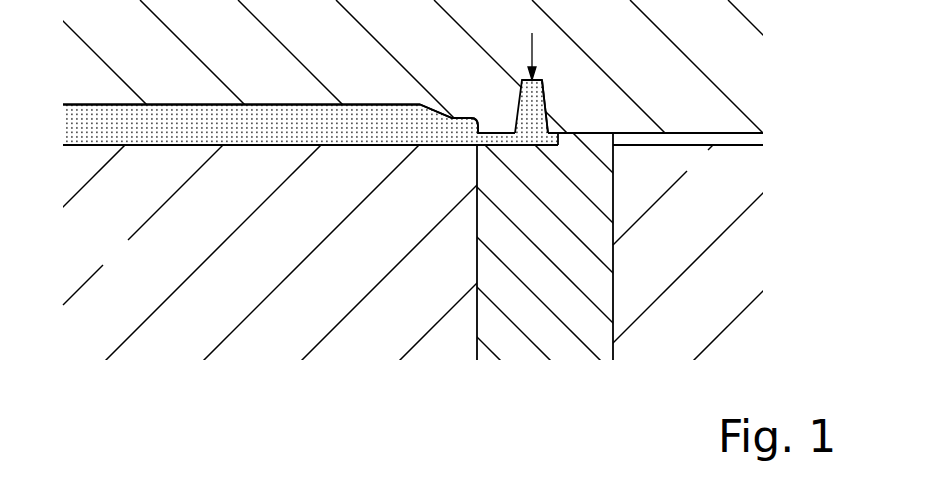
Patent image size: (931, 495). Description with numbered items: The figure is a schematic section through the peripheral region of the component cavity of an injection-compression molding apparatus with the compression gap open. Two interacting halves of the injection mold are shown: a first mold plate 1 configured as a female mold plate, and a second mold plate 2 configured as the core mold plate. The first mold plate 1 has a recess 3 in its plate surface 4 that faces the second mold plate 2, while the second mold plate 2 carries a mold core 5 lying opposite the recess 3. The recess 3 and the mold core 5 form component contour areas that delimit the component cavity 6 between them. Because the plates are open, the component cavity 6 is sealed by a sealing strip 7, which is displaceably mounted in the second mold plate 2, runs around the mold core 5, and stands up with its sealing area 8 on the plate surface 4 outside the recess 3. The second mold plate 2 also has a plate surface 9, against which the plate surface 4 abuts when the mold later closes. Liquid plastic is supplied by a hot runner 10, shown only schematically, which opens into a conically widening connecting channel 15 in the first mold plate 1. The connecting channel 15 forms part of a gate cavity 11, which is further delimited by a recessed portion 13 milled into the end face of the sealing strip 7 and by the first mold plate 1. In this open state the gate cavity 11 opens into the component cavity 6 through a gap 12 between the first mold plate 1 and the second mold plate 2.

The first mold plate 1 is at (100, 52).
The second mold plate 2 is at (106, 263).
The recess 3 is at (268, 104).
The plate surface 4 is at (698, 132).
The mold core 5 is at (270, 146).
The component cavity 6 is at (194, 121).
The sealing strip 7 is at (591, 284).
The sealing area 8 is at (584, 135).
The plate surface 9 is at (700, 146).
The hot runner 10 is at (535, 52).
The gate cavity 11 is at (541, 137).
The gap 12 is at (478, 137).
The recessed portion 13 is at (510, 146).
The connecting channel 15 is at (518, 108).